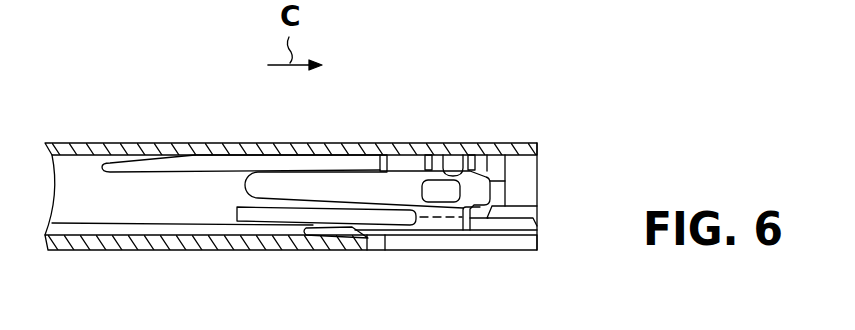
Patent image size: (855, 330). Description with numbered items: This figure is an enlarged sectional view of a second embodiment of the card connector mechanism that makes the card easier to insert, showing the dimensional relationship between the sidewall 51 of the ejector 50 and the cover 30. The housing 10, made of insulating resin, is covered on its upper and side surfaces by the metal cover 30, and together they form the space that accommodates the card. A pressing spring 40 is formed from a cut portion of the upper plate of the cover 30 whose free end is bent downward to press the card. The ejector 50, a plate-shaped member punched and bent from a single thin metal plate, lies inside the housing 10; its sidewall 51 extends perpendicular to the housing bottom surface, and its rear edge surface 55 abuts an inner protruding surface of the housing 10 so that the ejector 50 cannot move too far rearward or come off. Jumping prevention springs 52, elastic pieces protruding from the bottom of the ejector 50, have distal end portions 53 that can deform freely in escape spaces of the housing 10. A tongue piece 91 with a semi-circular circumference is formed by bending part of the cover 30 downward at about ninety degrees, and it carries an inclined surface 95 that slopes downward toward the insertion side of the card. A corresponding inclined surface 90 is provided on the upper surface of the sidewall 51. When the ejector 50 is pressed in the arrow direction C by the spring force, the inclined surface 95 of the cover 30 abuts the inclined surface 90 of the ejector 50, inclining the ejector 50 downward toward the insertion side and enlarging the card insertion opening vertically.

The housing 10 is at (225, 252).
The cover 30 is at (173, 153).
The pressing spring 40 is at (122, 165).
The ejector 50 is at (403, 223).
The sidewall 51 is at (289, 187).
The jumping prevention spring 52 is at (387, 228).
The distal end portion 53 is at (332, 233).
The rear edge surface 55 is at (530, 185).
The inclined surface 90 is at (490, 168).
The tongue piece 91 is at (452, 162).
The inclined surface 95 is at (427, 162).